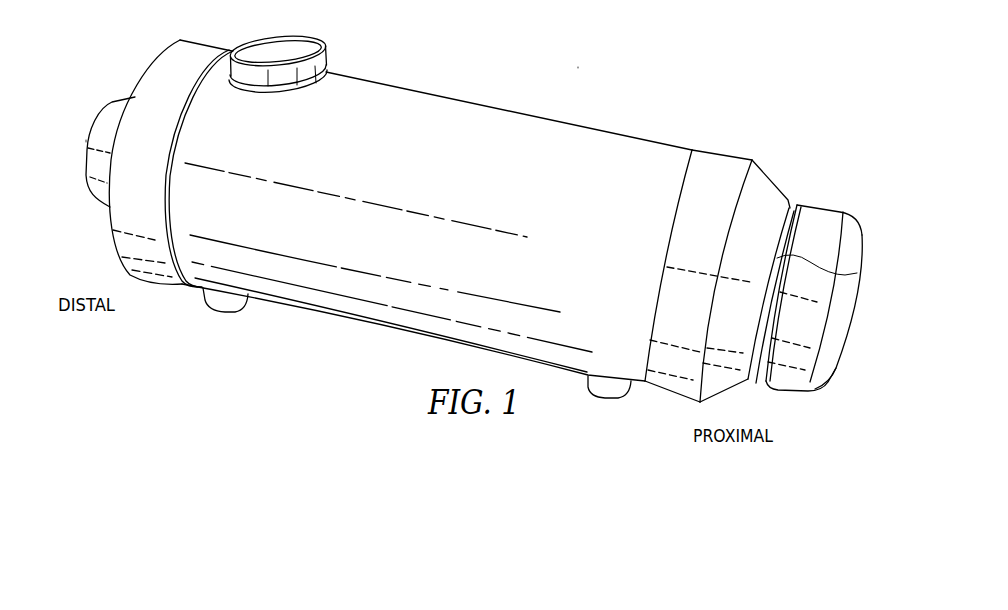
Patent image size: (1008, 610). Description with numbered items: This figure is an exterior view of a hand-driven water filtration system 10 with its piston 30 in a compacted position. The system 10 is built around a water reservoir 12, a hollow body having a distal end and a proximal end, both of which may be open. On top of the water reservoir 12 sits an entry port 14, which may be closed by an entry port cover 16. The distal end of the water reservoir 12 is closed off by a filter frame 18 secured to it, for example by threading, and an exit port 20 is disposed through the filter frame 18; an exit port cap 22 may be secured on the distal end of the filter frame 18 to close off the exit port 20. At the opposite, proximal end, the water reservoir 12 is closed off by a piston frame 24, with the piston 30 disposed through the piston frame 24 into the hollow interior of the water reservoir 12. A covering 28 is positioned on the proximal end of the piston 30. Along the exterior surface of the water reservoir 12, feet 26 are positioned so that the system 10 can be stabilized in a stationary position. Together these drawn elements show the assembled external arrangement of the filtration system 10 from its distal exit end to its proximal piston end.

The hand-driven water filtration system 10 is at (582, 63).
The water reservoir 12 is at (469, 194).
The entry port 14 is at (281, 44).
The entry port cover 16 is at (238, 45).
The filter frame 18 is at (168, 60).
The exit port 20 is at (80, 138).
The exit port cap 22 is at (113, 108).
The piston frame 24 is at (723, 163).
The feet 26 is at (222, 306).
The covering 28 is at (813, 237).
The piston 30 is at (857, 273).